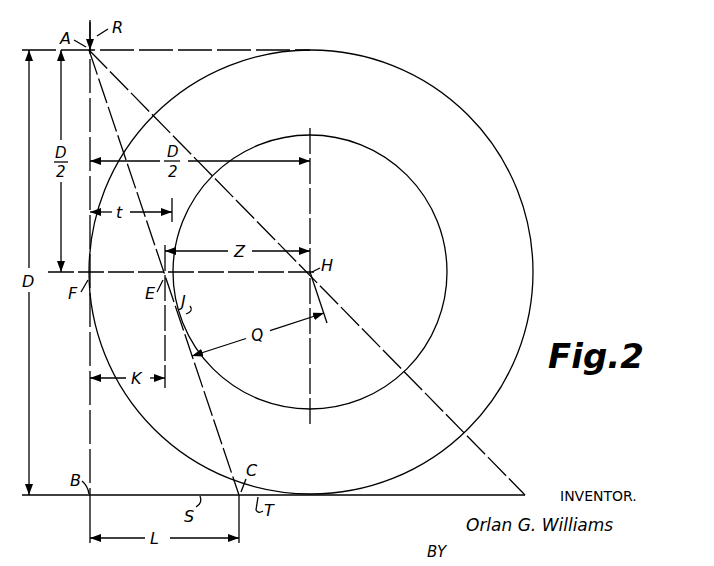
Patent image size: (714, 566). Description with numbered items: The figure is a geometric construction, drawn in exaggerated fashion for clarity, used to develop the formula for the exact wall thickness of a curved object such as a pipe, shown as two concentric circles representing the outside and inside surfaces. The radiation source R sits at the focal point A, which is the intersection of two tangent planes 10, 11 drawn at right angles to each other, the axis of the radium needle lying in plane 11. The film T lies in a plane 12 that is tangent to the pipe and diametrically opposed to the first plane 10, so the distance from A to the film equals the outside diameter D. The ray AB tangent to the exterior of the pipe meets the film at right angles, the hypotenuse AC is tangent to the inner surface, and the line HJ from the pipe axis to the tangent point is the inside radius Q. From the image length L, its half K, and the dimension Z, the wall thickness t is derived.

The tangent plane 10 is at (214, 50).
The tangent plane 11 is at (90, 441).
The film plane 12 is at (436, 482).